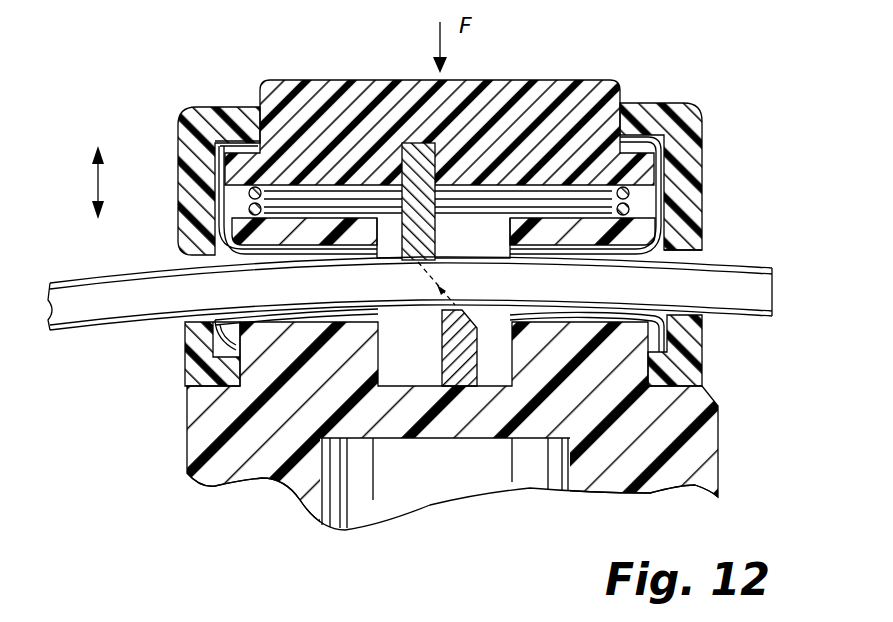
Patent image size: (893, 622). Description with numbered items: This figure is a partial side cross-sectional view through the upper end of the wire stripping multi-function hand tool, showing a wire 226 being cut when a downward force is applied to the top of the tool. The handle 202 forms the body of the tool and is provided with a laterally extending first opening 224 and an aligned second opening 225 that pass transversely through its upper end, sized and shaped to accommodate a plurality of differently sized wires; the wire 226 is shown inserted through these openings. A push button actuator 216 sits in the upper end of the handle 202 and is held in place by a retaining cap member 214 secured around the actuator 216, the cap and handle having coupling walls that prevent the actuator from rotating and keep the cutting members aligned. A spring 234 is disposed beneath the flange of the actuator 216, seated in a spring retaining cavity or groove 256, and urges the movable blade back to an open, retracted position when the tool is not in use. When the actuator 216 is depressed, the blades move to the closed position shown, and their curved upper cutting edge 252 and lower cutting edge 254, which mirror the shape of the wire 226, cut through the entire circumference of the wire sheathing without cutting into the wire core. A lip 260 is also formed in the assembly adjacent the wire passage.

The handle 202 is at (712, 445).
The retaining cap member 214 is at (680, 101).
The push button actuator 216 is at (537, 80).
The first opening 224 is at (187, 258).
The second opening 225 is at (700, 250).
The wire 226 is at (68, 293).
The spring 234 is at (343, 190).
The upper cutting edge 252 is at (403, 258).
The lower cutting edge 254 is at (467, 323).
The spring retaining cavity or groove 256 is at (239, 218).
The lip 260 is at (248, 330).